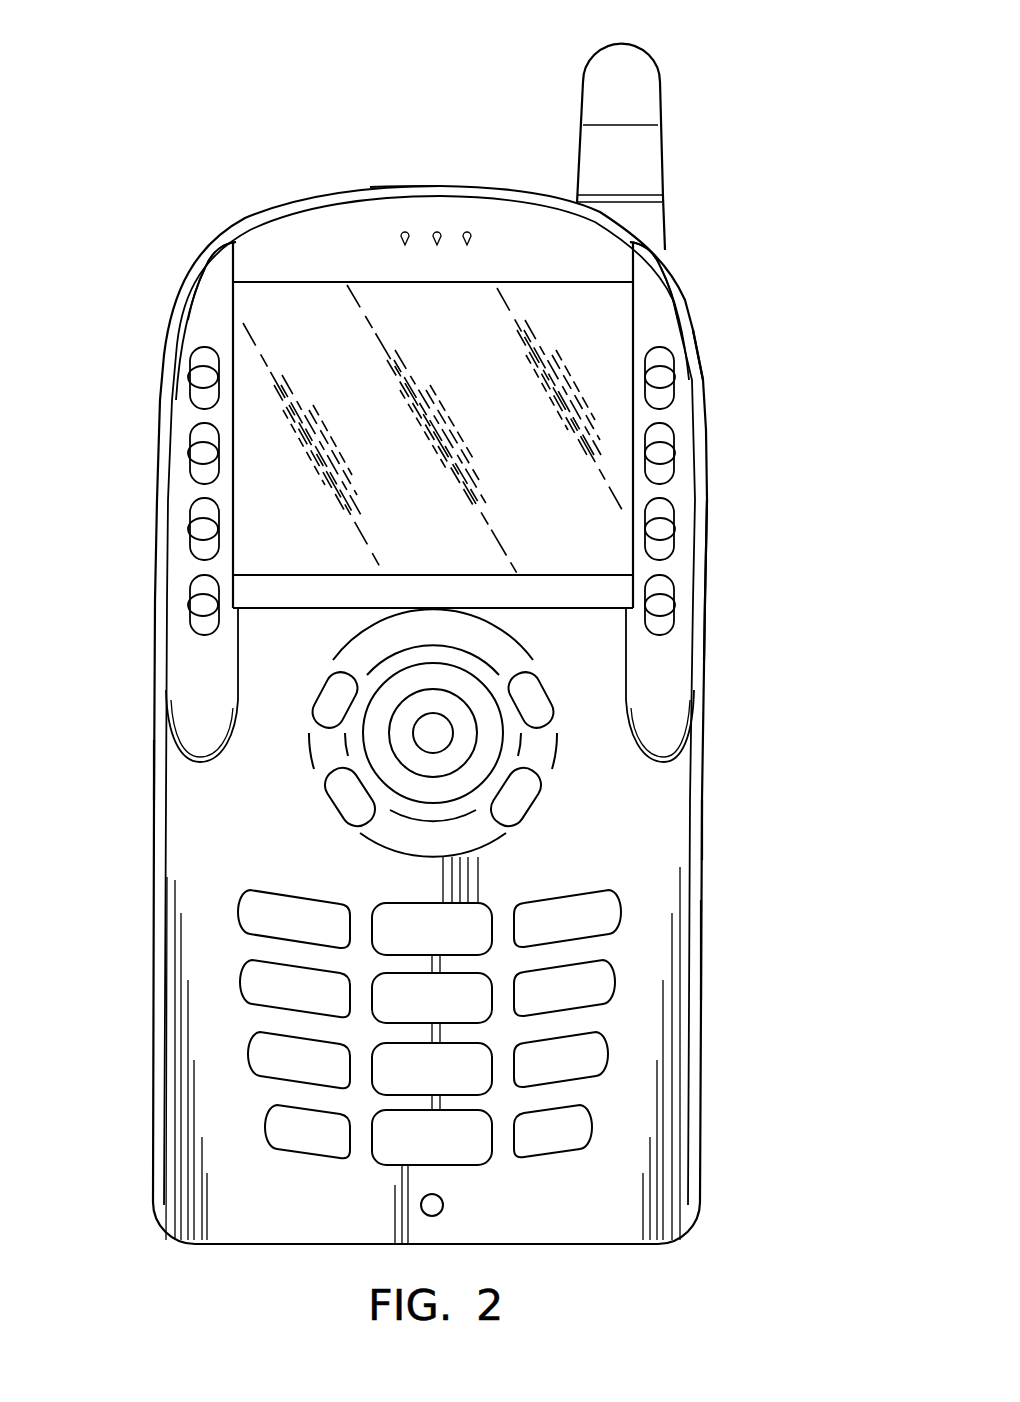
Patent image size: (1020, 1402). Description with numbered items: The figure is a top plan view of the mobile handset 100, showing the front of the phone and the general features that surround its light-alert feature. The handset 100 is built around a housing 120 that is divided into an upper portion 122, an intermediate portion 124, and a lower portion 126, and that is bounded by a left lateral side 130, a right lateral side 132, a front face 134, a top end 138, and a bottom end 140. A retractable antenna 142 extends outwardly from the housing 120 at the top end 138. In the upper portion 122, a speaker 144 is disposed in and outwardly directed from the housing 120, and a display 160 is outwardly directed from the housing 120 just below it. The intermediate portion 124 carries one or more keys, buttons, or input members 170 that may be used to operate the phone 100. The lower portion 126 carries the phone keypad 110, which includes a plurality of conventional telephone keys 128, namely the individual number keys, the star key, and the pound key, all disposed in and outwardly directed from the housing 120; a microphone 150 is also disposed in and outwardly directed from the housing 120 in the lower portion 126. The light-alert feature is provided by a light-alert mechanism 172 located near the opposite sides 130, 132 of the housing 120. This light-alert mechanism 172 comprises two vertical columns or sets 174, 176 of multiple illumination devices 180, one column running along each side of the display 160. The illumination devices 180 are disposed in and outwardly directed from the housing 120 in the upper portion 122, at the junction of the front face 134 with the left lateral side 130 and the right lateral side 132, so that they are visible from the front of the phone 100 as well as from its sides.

The mobile handset 100 is at (158, 118).
The phone keypad 110 is at (622, 1086).
The housing 120 is at (228, 215).
The upper portion 122 is at (732, 358).
The intermediate portion 124 is at (732, 653).
The lower portion 126 is at (728, 958).
The telephone keys 128 is at (591, 1138).
The left lateral side 130 is at (158, 782).
The right lateral side 132 is at (700, 830).
The front face 134 is at (200, 873).
The top end 138 is at (415, 185).
The bottom end 140 is at (275, 1244).
The retractable antenna 142 is at (657, 73).
The speaker 144 is at (476, 210).
The microphone 150 is at (465, 1213).
The display 160 is at (330, 275).
The input members 170 is at (337, 797).
The light-alert mechanism 172 is at (140, 362).
The vertical column of illumination devices 174 is at (205, 330).
The vertical column of illumination devices 176 is at (660, 322).
The illumination devices 180 is at (198, 450).